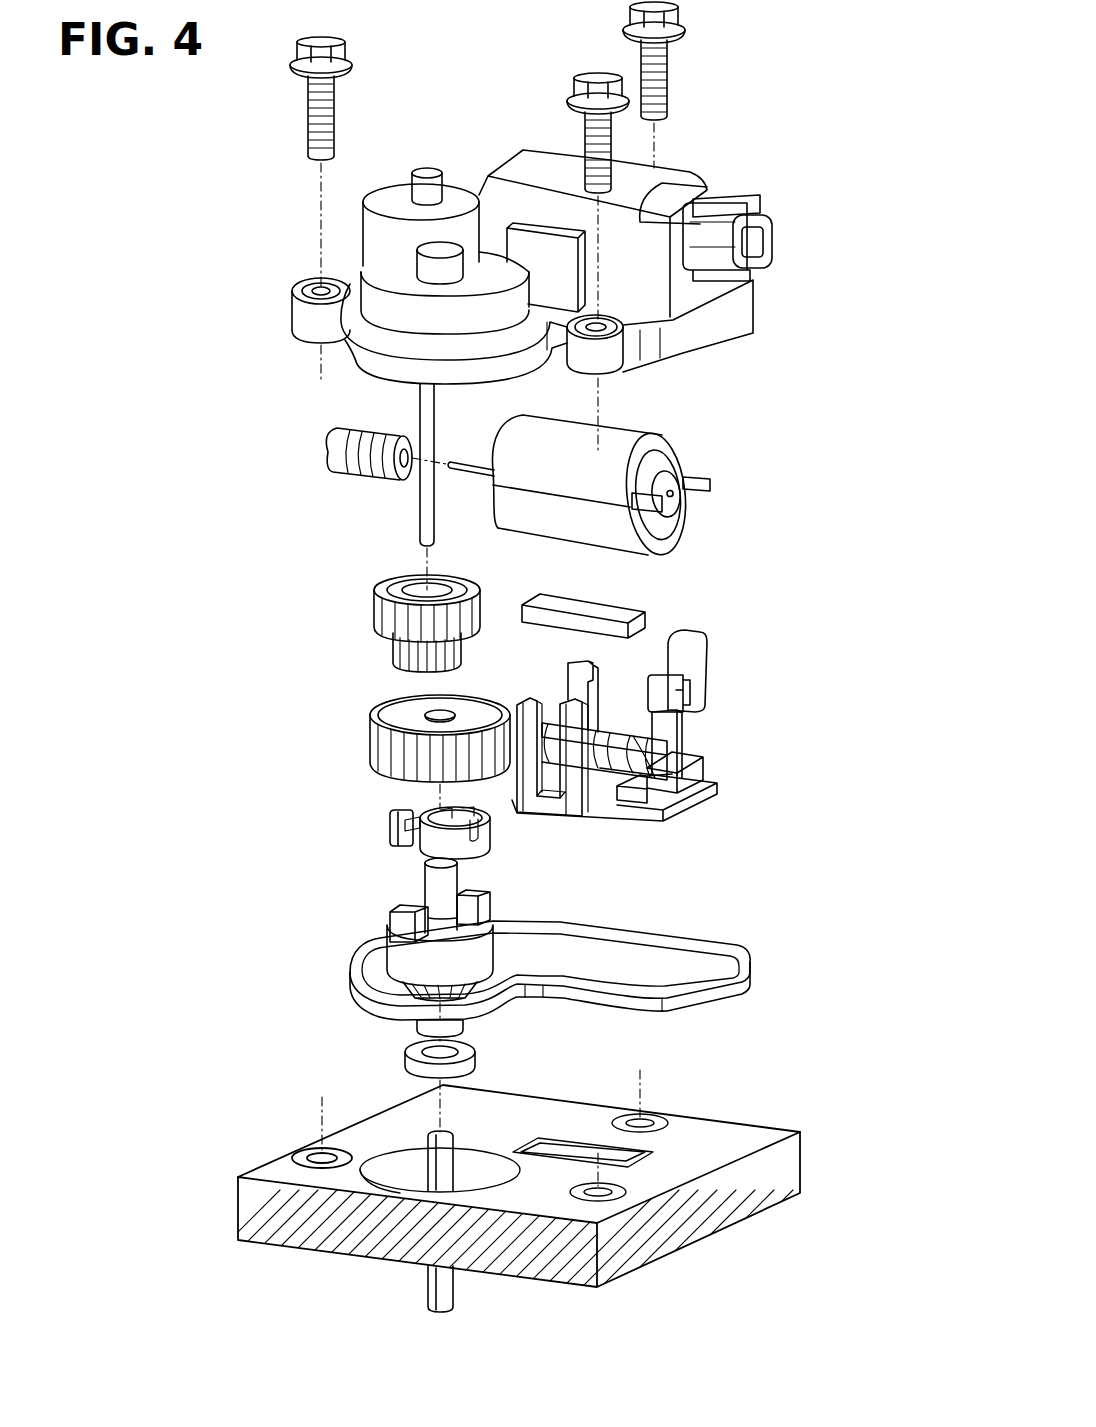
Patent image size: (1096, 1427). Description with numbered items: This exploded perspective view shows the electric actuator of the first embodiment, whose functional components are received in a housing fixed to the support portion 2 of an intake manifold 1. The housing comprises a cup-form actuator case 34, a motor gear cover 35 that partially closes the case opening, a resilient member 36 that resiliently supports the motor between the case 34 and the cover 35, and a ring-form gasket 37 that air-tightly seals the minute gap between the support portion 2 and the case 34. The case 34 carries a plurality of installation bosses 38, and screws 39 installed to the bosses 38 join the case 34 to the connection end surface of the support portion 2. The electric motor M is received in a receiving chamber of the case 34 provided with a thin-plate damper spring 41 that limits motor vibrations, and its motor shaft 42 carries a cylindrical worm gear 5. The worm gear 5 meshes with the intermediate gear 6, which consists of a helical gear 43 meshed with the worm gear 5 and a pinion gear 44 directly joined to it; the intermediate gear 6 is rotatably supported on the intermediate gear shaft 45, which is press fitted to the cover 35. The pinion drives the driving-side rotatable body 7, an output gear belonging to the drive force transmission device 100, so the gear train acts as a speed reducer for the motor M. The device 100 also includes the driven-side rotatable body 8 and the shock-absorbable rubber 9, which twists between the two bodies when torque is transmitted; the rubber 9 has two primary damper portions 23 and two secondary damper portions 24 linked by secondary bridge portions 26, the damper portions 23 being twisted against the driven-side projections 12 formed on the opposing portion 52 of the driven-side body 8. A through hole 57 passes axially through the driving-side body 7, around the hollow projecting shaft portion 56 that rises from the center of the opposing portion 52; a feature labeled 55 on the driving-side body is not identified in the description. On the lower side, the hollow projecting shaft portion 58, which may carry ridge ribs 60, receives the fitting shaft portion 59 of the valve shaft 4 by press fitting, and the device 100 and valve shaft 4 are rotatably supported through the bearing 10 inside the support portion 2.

The intake manifold 1 is at (561, 1200).
The support portion 2 is at (750, 1133).
The valve shaft 4 is at (427, 1283).
The worm gear 5 is at (353, 430).
The intermediate gear 6 is at (360, 617).
The driving-side rotatable body 7 is at (402, 680).
The driven-side rotatable body 8 is at (545, 955).
The shock-absorbable rubber 9 is at (410, 824).
The bearing 10 is at (473, 1063).
The driven-side projections 12 is at (483, 908).
The primary damper portions 23 is at (392, 822).
The secondary damper portions 24 is at (453, 842).
The secondary bridge portions 26 is at (403, 832).
The actuator case 34 is at (531, 282).
The motor gear cover 35 is at (638, 821).
The resilient member 36 is at (620, 603).
The gasket 37 is at (690, 940).
The installation bosses 38 is at (298, 316).
The screws 39 is at (316, 43).
The damper spring 41 is at (697, 662).
The motor shaft 42 is at (462, 475).
The helical gear 43 is at (380, 600).
The pinion gear 44 is at (397, 650).
The intermediate gear shaft 45 is at (417, 513).
The opposing portion 52 is at (442, 955).
The gear teeth 55 is at (393, 753).
The projecting shaft portion 56 is at (430, 880).
The through hole 57 is at (450, 716).
The projecting shaft portion 58 is at (413, 1022).
The fitting shaft portion 59 is at (330, 1168).
The ridge ribs 60 is at (410, 982).
The drive force transmission device 100 is at (422, 680).
The electric motor M is at (617, 433).